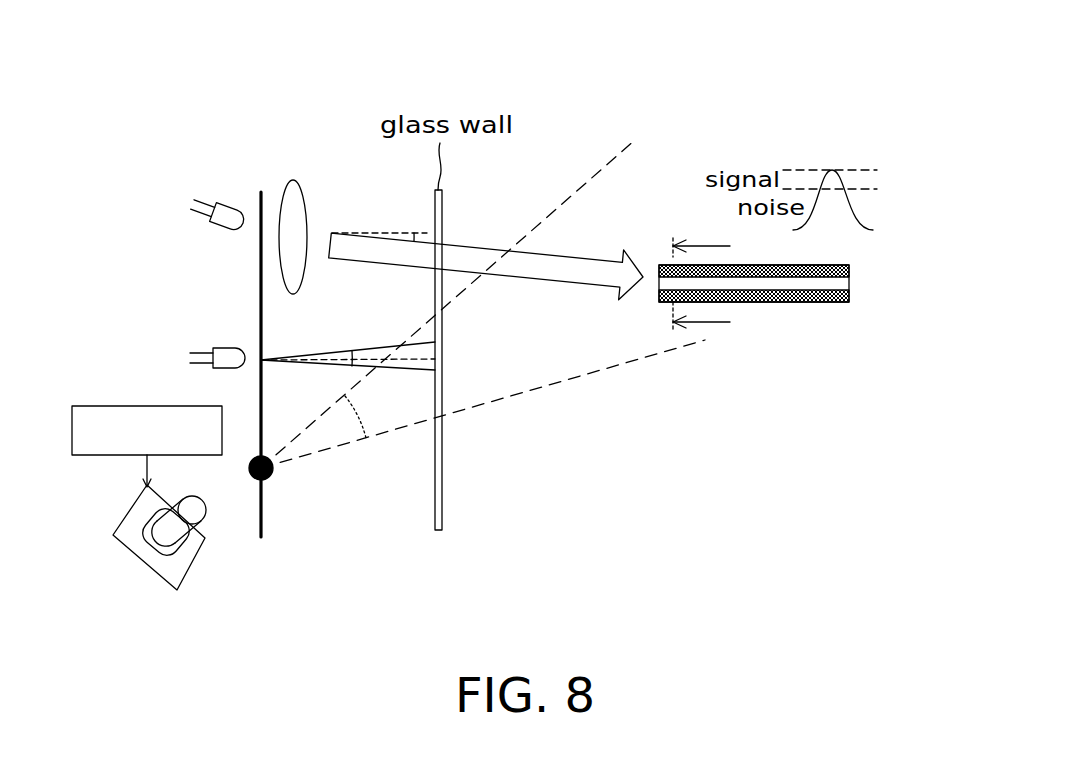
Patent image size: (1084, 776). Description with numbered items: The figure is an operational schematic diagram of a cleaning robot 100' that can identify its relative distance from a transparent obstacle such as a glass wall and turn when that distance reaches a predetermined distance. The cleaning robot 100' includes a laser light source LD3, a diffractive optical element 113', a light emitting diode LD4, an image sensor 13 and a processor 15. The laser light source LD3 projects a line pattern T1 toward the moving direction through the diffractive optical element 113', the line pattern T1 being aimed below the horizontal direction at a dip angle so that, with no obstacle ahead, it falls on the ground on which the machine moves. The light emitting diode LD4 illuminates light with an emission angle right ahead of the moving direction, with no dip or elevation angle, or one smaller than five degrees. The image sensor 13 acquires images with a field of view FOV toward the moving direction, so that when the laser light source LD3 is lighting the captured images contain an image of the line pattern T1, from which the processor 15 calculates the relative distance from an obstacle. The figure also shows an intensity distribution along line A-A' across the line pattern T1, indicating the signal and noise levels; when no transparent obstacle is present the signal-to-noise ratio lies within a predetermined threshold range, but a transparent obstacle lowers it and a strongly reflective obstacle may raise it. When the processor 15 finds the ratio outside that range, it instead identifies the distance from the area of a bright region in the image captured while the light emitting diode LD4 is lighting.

The cleaning robot 100' is at (223, 282).
The diffractive optical element 113' is at (303, 193).
The laser light source LD3 is at (218, 205).
The light emitting diode LD4 is at (216, 342).
The line pattern T1 is at (895, 258).
The field of view FOV is at (483, 304).
The end point of line A- A' is at (716, 248).
The end point of line A-A' A is at (713, 320).
The processor 15 is at (110, 406).
The image sensor 13 is at (188, 577).